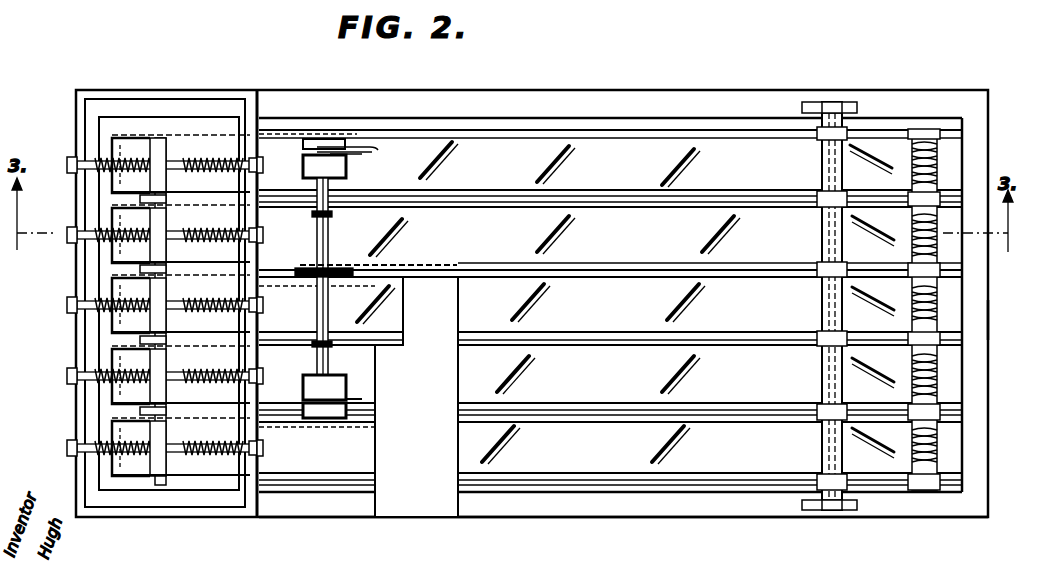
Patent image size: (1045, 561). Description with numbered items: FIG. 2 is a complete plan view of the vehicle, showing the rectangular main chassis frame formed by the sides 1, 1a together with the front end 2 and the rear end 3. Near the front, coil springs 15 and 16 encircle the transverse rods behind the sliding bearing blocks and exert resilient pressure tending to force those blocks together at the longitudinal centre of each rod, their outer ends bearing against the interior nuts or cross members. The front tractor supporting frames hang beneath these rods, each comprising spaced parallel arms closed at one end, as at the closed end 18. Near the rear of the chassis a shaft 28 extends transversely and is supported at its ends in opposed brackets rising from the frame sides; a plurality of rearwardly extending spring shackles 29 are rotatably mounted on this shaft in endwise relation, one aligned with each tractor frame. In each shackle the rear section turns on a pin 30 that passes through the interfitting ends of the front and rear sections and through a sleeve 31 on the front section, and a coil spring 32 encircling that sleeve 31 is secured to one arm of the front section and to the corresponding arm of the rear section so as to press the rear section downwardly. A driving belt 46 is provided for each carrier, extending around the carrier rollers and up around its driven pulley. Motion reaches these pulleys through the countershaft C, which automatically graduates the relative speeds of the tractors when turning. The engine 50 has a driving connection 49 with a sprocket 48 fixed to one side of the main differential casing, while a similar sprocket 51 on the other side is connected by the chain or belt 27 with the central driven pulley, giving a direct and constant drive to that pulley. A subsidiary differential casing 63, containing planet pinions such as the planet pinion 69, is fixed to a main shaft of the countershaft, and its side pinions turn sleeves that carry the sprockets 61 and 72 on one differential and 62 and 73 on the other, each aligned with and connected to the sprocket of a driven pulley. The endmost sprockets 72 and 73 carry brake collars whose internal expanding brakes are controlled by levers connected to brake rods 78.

The side 1 is at (612, 92).
The side 1a is at (641, 519).
The front end 2 is at (76, 120).
The rear end 3 is at (990, 320).
The coil spring 15 is at (108, 238).
The coil spring 16 is at (194, 234).
The closed end of tractor supporting frame 18 is at (166, 140).
The driving belt or chain 27 is at (280, 135).
The shaft 28 is at (832, 512).
The spring shackle 29 is at (854, 192).
The pin 30 is at (928, 130).
The sleeve 31 is at (938, 152).
The coil spring 32 is at (938, 170).
The driving belt 46 is at (610, 307).
The sprocket 48 is at (338, 264).
The driving connection 49 is at (396, 264).
The engine 50 is at (416, 397).
The sprocket 51 is at (326, 280).
The sprocket 61 is at (334, 212).
The sprocket 62 is at (332, 347).
The subsidiary differential casing 63 is at (302, 172).
The planet pinion 69 is at (308, 376).
The endmost sprocket 72 is at (378, 153).
The endmost sprocket 73 is at (306, 404).
The brake rod 78 is at (360, 155).
The countershaft C is at (317, 239).